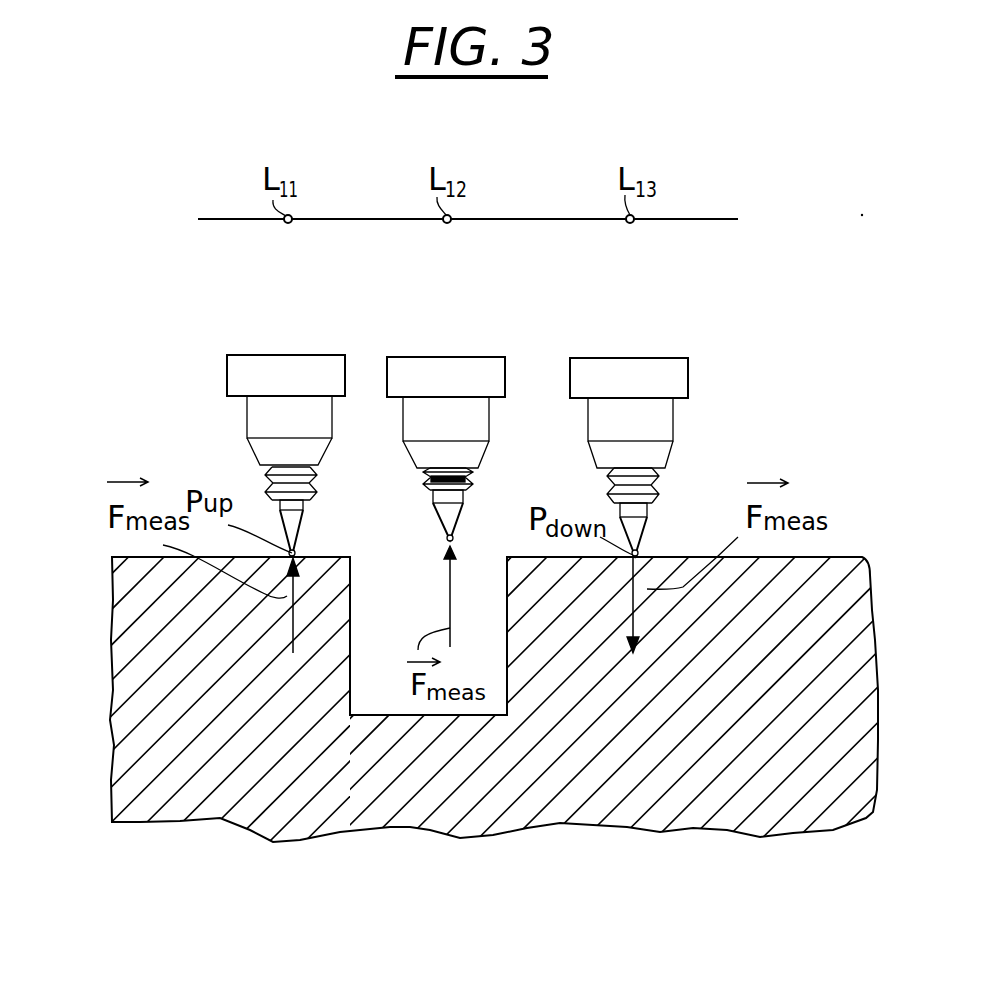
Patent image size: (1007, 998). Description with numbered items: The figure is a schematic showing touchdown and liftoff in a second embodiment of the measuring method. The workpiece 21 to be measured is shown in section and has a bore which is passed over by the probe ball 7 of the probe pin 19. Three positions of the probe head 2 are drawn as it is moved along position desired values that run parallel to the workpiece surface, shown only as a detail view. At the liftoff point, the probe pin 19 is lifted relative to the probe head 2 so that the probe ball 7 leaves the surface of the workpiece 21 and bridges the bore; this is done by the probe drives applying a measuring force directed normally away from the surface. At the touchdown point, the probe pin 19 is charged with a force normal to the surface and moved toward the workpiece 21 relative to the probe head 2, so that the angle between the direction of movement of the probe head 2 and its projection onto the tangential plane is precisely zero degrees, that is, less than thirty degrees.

The probe head 2 is at (312, 367).
The probe pin 19 is at (277, 509).
The probe ball 7 is at (292, 553).
The workpiece 21 is at (112, 743).